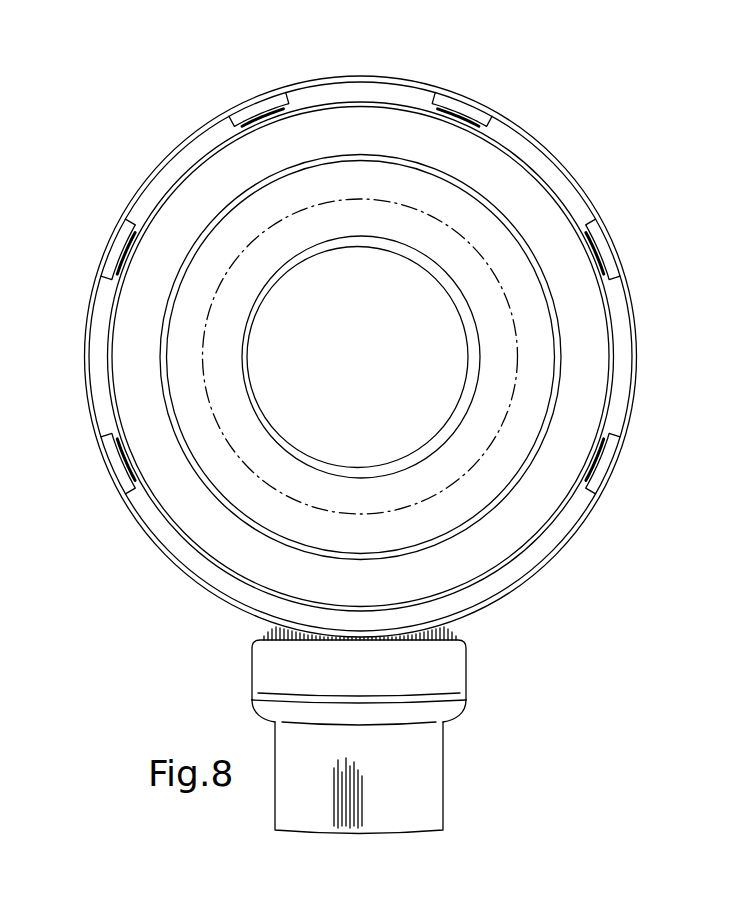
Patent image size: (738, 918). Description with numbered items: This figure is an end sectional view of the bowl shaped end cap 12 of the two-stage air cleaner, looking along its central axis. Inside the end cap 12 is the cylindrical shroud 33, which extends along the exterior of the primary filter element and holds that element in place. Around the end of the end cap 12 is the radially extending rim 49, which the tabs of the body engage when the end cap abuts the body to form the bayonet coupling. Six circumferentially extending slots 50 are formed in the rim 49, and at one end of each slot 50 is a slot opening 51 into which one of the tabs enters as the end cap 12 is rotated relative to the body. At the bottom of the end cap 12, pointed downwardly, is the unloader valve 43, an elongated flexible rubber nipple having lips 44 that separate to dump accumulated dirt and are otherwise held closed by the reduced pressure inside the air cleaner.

The end cap 12 is at (406, 364).
The cylindrical shroud 33 is at (466, 208).
The unloader valve 43 is at (472, 665).
The lips 44 is at (400, 772).
The rim 49 is at (299, 95).
The slots 50 is at (234, 99).
The slot opening 51 is at (262, 98).